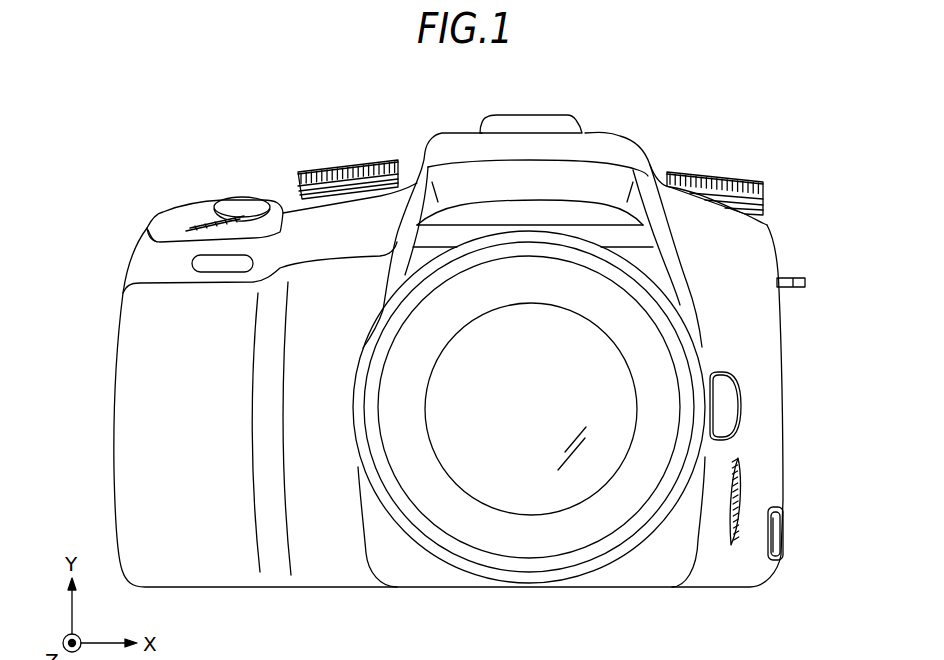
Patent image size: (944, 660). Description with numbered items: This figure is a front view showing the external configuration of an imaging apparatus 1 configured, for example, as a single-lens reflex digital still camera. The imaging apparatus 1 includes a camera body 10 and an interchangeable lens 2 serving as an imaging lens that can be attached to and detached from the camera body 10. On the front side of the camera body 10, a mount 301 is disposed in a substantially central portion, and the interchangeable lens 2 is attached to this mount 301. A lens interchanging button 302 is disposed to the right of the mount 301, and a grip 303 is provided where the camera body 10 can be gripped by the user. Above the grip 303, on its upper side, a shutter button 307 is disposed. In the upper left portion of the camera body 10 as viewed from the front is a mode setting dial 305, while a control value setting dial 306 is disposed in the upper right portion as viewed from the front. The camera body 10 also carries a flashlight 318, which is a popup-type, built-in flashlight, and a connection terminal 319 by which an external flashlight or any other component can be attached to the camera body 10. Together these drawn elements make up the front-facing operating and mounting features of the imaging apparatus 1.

The imaging apparatus 1 is at (103, 102).
The camera body 10 is at (150, 199).
The interchangeable lens 2 is at (623, 420).
The mount 301 is at (621, 564).
The lens interchanging button 302 is at (728, 410).
The grip 303 is at (140, 452).
The mode setting dial 305 is at (348, 168).
The control value setting dial 306 is at (718, 180).
The shutter button 307 is at (240, 203).
The flashlight 318 is at (431, 138).
The connection terminal 319 is at (538, 123).